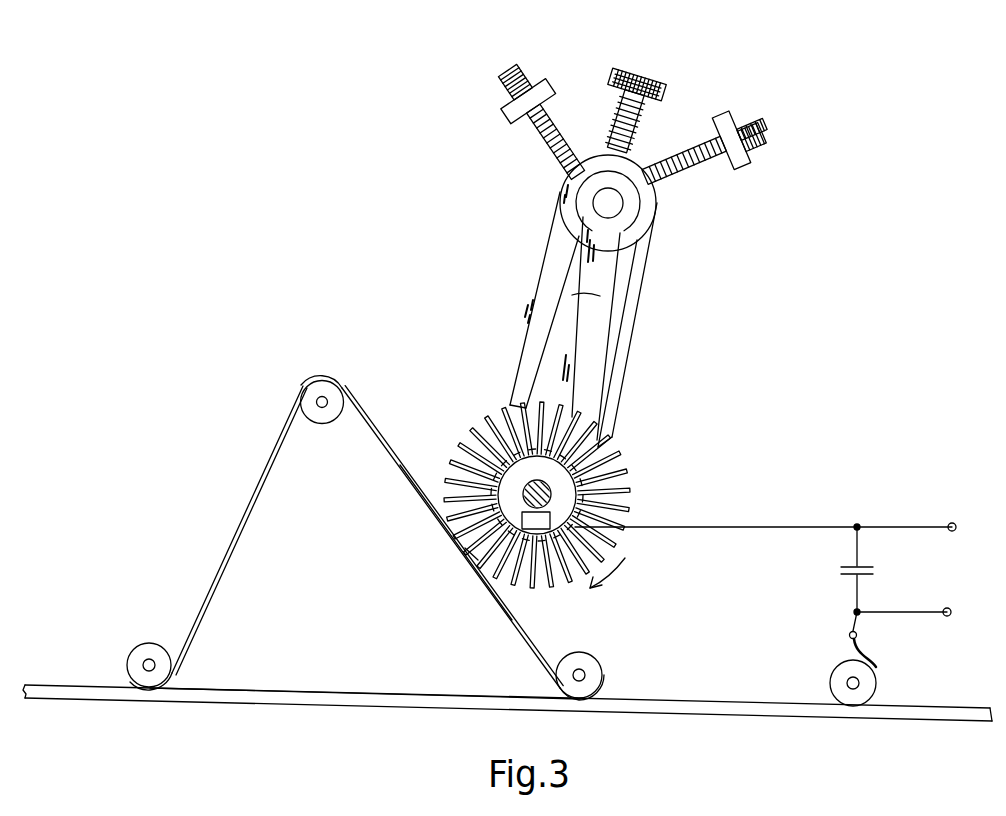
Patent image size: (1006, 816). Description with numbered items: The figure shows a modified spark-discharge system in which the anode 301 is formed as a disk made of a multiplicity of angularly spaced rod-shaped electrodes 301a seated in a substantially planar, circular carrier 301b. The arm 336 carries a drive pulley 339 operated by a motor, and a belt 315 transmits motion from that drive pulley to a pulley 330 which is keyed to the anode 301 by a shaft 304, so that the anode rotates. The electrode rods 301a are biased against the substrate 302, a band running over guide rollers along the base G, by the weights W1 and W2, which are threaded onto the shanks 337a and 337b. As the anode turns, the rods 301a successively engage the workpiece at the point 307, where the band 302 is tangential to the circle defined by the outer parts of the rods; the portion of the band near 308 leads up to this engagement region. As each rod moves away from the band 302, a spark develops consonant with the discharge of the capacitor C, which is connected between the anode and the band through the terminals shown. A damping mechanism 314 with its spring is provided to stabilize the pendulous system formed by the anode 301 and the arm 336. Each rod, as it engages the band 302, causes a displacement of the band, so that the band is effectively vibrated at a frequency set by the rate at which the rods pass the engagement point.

The anode 301 is at (546, 520).
The rod-shaped electrodes 301a is at (605, 540).
The carrier 301b is at (457, 558).
The substrate 302 is at (378, 440).
The shaft 304 is at (523, 484).
The engagement point 307 is at (457, 558).
The belt run 308 is at (440, 522).
The damping mechanism 314 is at (622, 75).
The belt 315 is at (543, 267).
The pulley 330 is at (535, 570).
The arm 336 is at (605, 282).
The shank 337a is at (725, 159).
The shank 337b is at (509, 120).
The drive pulley 339 is at (655, 207).
The weight W1 is at (748, 165).
The weight W2 is at (500, 113).
The capacitor C is at (874, 569).
The ground / base plate G is at (507, 703).